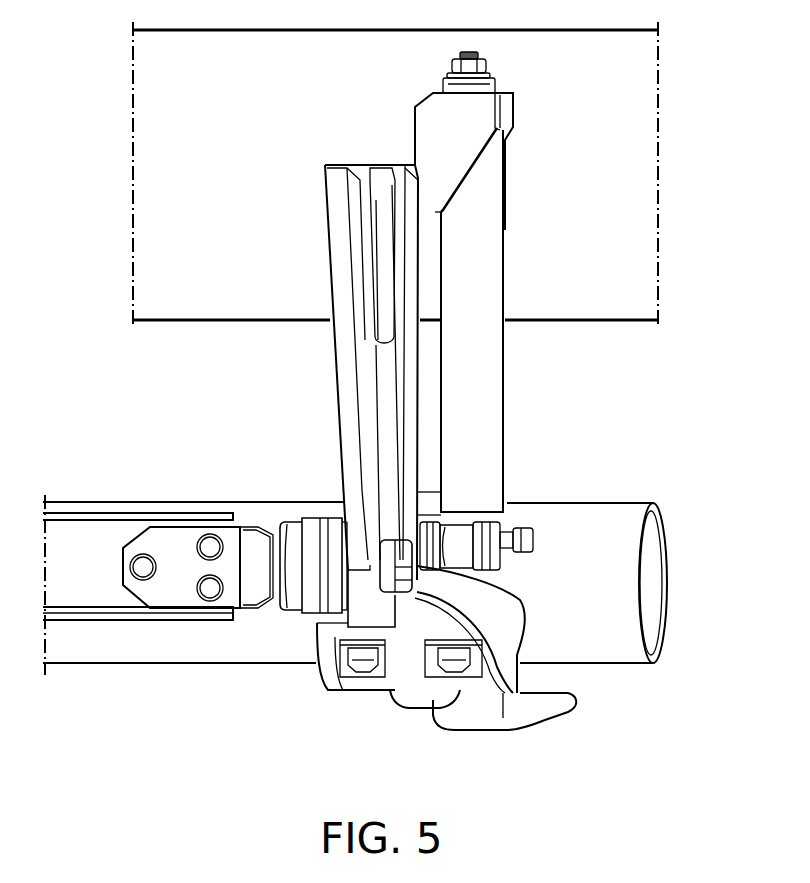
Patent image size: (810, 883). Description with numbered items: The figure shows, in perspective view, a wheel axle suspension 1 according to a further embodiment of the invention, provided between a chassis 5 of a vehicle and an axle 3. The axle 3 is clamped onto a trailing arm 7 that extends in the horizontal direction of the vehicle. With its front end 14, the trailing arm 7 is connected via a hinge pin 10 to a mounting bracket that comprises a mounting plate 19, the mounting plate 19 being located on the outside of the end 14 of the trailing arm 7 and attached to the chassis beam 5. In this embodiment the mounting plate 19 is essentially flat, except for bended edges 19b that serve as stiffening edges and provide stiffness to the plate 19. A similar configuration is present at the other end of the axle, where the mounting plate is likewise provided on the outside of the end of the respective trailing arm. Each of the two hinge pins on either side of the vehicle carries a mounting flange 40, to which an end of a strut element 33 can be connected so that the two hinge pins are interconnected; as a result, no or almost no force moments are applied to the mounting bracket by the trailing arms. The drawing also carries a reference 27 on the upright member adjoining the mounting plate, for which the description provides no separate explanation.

The wheel axle suspension 1 is at (604, 398).
The axle 3 is at (655, 580).
The chassis 5 is at (640, 118).
The trailing arm 7 is at (410, 697).
The hinge pin 10 is at (395, 577).
The front end 14 is at (315, 527).
The mounting plate 19 is at (343, 345).
The bended edges 19b is at (413, 408).
The strut / shock absorber 27 is at (490, 418).
The strut element 33 is at (77, 537).
The mounting flange 40 is at (178, 547).